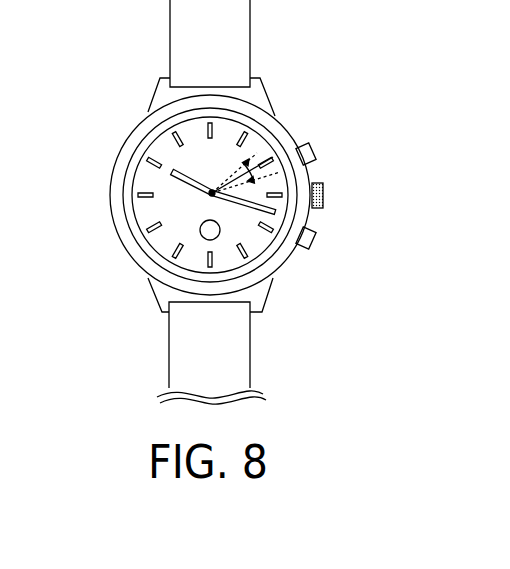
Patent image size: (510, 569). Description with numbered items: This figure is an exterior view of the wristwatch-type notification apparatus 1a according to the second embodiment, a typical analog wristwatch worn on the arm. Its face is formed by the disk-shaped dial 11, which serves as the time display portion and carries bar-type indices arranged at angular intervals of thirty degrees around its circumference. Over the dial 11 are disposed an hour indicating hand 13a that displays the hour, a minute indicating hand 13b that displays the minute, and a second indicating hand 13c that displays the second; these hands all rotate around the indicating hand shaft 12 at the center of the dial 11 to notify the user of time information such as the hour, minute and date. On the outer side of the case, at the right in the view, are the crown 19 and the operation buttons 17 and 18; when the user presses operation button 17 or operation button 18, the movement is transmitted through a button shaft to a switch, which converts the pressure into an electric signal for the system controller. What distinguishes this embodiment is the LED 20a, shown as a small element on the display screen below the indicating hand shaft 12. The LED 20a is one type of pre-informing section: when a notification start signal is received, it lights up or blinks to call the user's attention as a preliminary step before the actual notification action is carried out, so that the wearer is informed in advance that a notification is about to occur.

The wristwatch-type notification apparatus 1a is at (301, 69).
The dial 11 is at (157, 180).
The indicating hand shaft 12 is at (210, 197).
The hour indicating hand 13a is at (198, 189).
The minute indicating hand 13b is at (248, 208).
The second indicating hand 13c is at (233, 180).
The operation button 17 is at (318, 155).
The operation button 18 is at (318, 240).
The crown 19 is at (324, 196).
The LED 20a is at (208, 240).